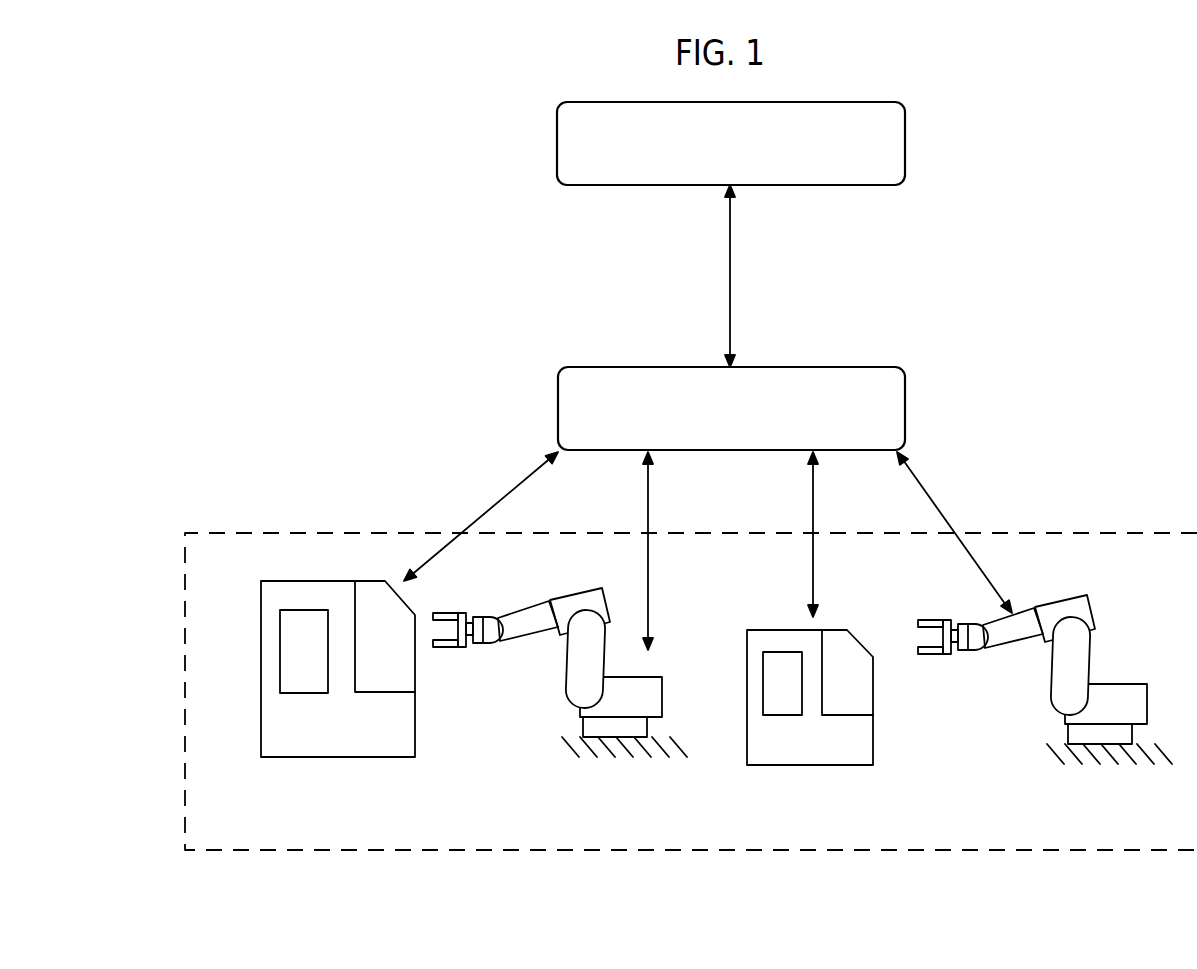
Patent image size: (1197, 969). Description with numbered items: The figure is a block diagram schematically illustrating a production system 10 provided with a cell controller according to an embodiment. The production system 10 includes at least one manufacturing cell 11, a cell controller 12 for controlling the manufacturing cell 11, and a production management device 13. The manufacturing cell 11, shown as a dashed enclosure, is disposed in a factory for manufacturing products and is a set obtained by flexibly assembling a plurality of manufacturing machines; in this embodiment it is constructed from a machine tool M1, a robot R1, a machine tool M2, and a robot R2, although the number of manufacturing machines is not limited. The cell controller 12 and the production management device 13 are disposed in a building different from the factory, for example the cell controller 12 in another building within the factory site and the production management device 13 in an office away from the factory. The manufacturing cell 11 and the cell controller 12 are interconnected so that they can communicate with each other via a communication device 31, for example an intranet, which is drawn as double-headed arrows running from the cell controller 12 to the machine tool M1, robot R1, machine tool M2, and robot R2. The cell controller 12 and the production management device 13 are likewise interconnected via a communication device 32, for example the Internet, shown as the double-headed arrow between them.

The production system 10 is at (1040, 302).
The manufacturing cell 11 is at (293, 532).
The cell controller 12 is at (558, 403).
The production management device 13 is at (557, 135).
The communication device 31 is at (503, 494).
The communication device 32 is at (728, 266).
The machine tool M1 is at (337, 730).
The robot R1 is at (633, 695).
The machine tool M2 is at (815, 733).
The robot R2 is at (1112, 697).